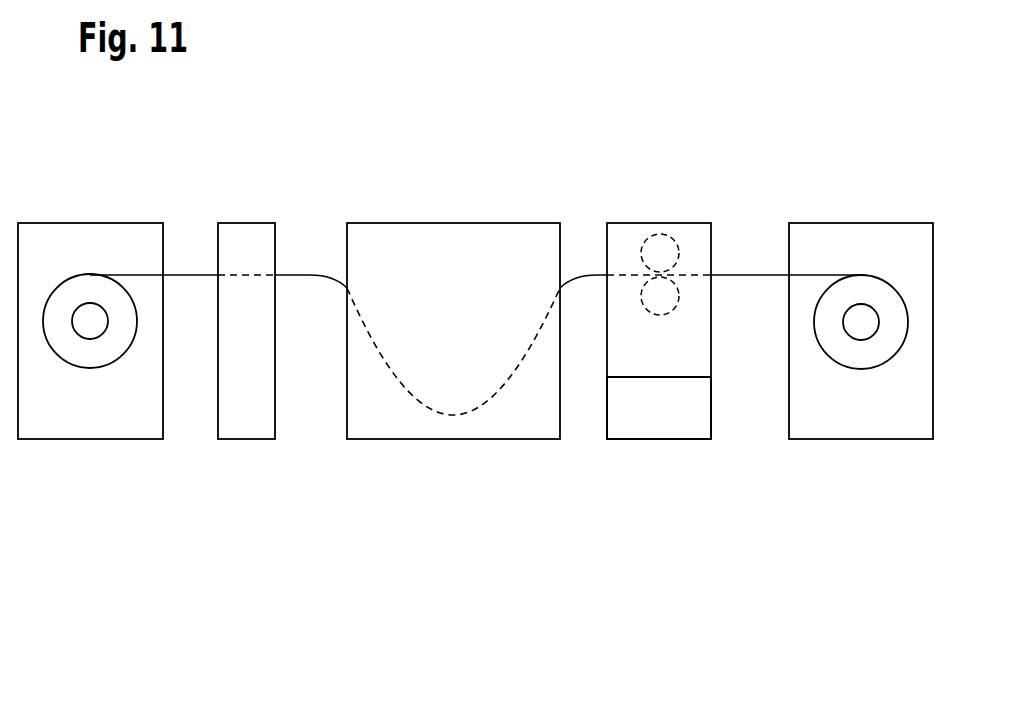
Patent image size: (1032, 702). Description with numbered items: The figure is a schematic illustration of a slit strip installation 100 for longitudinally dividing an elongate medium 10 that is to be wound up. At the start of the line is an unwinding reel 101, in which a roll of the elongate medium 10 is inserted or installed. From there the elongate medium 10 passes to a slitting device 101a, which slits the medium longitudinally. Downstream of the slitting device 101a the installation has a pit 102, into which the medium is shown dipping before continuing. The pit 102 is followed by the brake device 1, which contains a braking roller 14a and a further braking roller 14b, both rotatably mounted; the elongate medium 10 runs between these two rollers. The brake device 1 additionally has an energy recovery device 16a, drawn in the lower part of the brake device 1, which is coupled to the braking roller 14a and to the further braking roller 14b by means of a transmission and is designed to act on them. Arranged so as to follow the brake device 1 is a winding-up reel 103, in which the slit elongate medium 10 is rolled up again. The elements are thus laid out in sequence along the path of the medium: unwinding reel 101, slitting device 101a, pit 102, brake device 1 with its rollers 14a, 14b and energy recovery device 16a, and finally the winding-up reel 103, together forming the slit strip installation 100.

The brake device 1 is at (660, 196).
The elongate medium 10 is at (311, 274).
The braking roller 14a is at (655, 257).
The further braking roller 14b is at (667, 296).
The energy recovery device 16a is at (657, 427).
The slit strip installation 100 is at (349, 529).
The unwinding reel 101 is at (88, 237).
The slitting device 101a is at (244, 237).
The pit 102 is at (450, 237).
The winding-up reel 103 is at (859, 237).